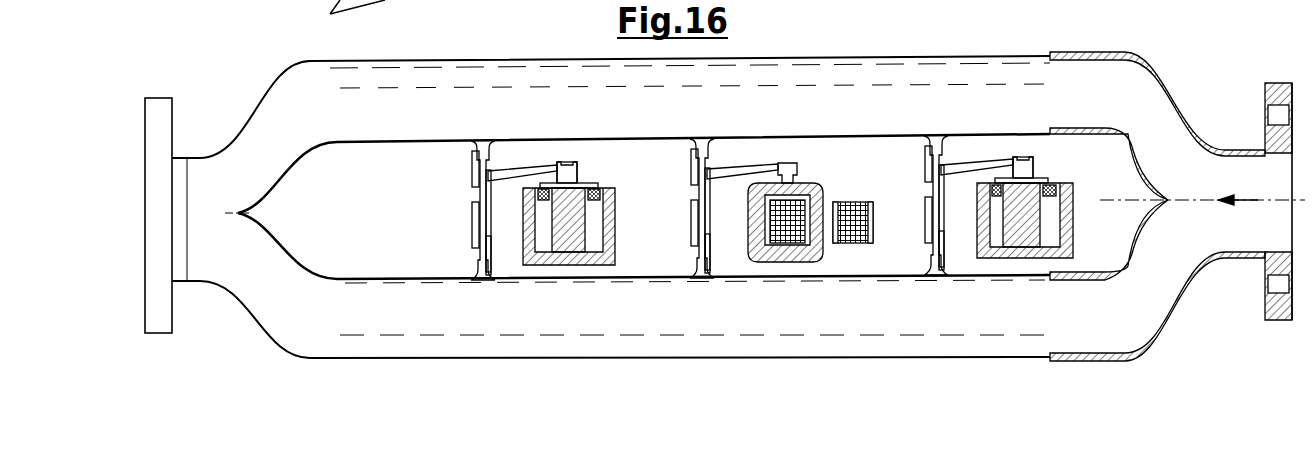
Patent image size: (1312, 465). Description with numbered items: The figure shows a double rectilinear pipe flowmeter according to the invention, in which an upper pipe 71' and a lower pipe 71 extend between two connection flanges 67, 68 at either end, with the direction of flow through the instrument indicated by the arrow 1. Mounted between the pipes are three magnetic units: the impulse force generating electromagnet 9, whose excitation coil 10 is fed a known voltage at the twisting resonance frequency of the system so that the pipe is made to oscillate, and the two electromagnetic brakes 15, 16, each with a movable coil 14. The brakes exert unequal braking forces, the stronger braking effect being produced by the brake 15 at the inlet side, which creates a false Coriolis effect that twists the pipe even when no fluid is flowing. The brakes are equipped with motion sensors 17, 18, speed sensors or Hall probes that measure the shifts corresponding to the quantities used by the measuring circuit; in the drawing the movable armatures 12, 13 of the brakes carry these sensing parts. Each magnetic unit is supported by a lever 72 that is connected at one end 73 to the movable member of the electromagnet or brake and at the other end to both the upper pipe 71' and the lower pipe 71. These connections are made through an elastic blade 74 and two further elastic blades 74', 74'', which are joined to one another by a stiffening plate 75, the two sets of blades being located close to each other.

The flow direction / pipe axis 1 is at (1247, 198).
The impulse force generating electromagnet 9 is at (815, 190).
The excitation coil 10 is at (860, 245).
The armature 12 is at (1033, 172).
The armature 13 is at (578, 172).
The movable coil 14 is at (575, 230).
The electromagnetic brake 15 is at (1072, 250).
The electromagnetic brake 16 is at (613, 266).
The motion sensor 17 is at (1050, 181).
The motion sensor 18 is at (600, 186).
The connection flange 67 is at (1270, 83).
The connection flange 68 is at (158, 128).
The lower pipe 71 is at (611, 207).
The upper pipe 71' is at (1071, 188).
The lever 72 is at (522, 168).
The lever end 73 is at (569, 162).
The elastic blade 74 is at (694, 187).
The elastic blade 74' is at (679, 177).
The elastic blade 74'' is at (736, 278).
The stiffening plate 75 is at (474, 224).